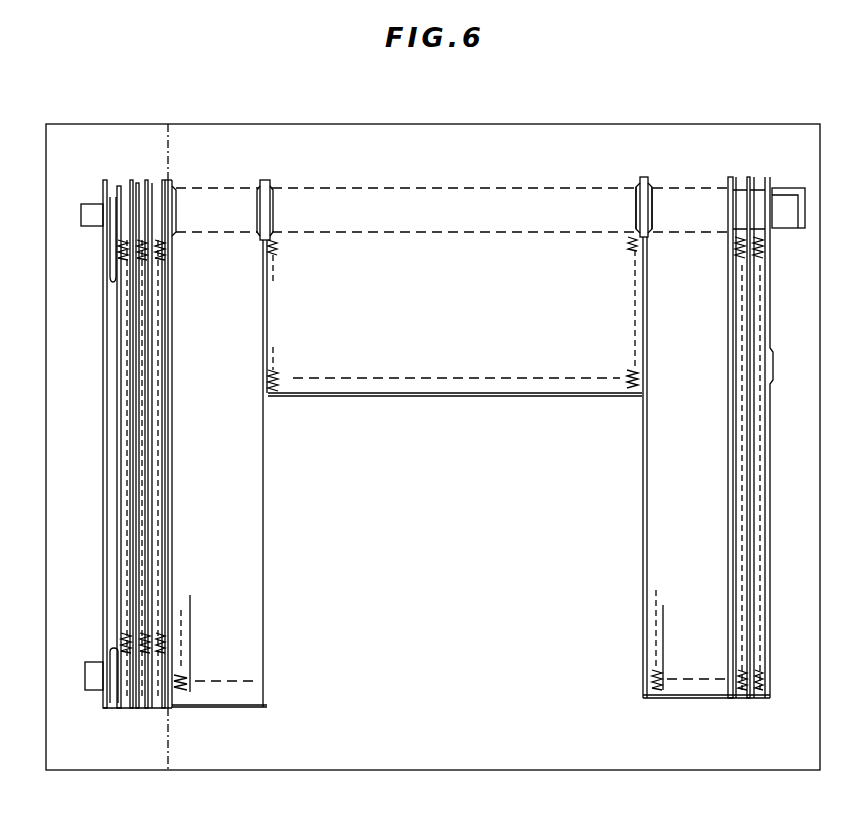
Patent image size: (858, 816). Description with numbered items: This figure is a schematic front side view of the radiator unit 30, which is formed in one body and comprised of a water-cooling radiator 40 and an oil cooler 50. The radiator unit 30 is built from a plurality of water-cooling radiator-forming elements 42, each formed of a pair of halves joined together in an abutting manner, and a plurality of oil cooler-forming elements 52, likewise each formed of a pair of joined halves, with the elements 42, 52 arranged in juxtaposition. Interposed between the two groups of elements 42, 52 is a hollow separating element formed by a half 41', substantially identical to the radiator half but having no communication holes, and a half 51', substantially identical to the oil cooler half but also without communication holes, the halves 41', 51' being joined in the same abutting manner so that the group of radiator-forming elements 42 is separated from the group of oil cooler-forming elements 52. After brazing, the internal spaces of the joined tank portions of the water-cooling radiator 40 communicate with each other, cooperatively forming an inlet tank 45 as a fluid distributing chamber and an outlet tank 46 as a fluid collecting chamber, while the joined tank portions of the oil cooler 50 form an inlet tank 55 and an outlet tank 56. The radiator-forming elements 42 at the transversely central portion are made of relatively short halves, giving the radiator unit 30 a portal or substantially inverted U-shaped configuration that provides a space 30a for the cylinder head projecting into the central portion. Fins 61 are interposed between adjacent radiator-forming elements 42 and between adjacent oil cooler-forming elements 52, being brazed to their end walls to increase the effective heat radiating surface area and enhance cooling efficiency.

The radiator unit 30 is at (292, 74).
The oil cooler 50 is at (130, 124).
The water-cooling radiator 40 is at (290, 124).
The inlet tank of the oil cooler 55 is at (142, 187).
The half of hollow separating element 51' is at (197, 160).
The half of hollow separating element 41' is at (230, 188).
The inlet tank of the radiator 45 is at (677, 186).
The outlet tank of the radiator 46 is at (644, 208).
The oil cooler-forming element 52 is at (135, 468).
The water-cooling radiator-forming element 42 is at (268, 312).
The fin 61 is at (160, 258).
The space 30a is at (421, 637).
The outlet tank of the oil cooler 56 is at (121, 703).